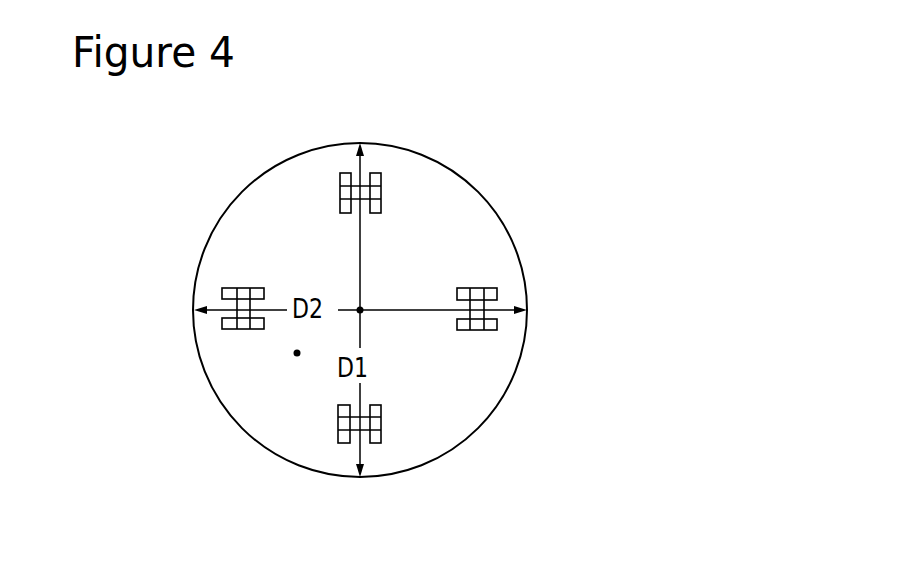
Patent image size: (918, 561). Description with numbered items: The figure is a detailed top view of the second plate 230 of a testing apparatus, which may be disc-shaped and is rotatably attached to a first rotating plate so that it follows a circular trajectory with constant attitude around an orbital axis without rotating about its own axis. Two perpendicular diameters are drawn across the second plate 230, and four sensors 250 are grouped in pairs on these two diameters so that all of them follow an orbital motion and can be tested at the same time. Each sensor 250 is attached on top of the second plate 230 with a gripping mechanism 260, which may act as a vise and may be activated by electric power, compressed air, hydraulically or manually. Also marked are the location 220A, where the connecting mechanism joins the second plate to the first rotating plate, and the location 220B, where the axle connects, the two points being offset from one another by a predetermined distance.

The second plate 230 is at (467, 177).
The location 220A is at (360, 310).
The location 220B is at (297, 353).
The sensor 250 is at (351, 313).
The gripping mechanism 260 is at (382, 180).